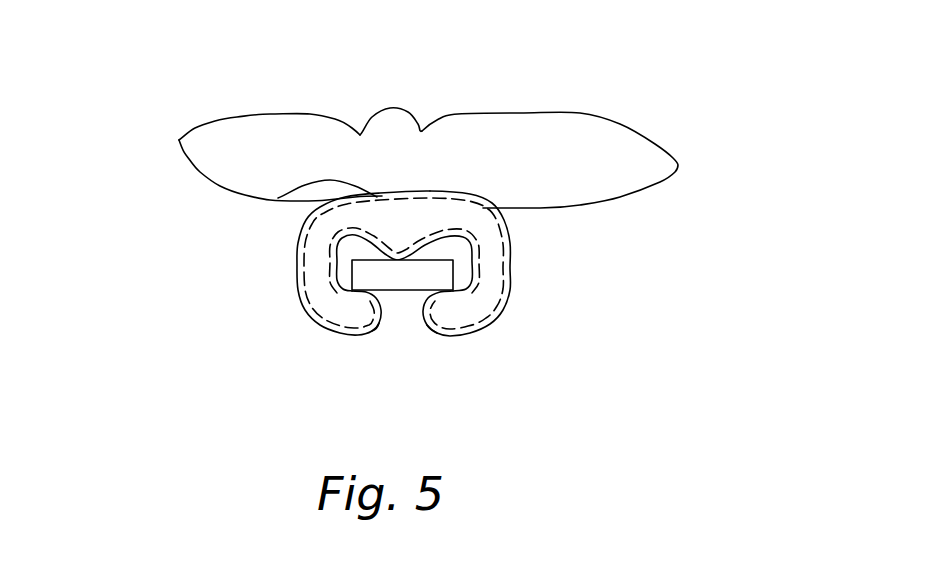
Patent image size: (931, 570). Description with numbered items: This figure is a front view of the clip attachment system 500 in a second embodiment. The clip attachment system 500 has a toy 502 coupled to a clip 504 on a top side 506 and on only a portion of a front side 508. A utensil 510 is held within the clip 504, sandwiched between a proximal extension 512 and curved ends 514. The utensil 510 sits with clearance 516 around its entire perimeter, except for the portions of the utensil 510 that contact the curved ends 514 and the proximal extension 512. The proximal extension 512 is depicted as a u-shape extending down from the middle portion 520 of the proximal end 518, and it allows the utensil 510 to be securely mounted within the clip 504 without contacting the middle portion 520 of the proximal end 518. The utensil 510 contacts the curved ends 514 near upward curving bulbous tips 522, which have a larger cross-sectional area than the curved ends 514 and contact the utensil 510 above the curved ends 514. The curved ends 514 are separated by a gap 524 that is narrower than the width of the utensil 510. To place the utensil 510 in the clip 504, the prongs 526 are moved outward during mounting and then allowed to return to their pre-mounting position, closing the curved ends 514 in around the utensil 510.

The clip attachment system 500 is at (166, 68).
The toy 502 is at (696, 141).
The clip 504 is at (541, 249).
The top side 506 is at (278, 198).
The front side 508 is at (313, 205).
The utensil 510 is at (395, 278).
The proximal extension 512 is at (411, 245).
The curved ends 514 is at (304, 322).
The clearance 516 is at (462, 268).
The proximal end 518 is at (488, 188).
The middle portion 520 is at (398, 213).
The upward curving bulbous tips 522 is at (456, 312).
The gap 524 is at (417, 333).
The prongs 526 is at (310, 267).